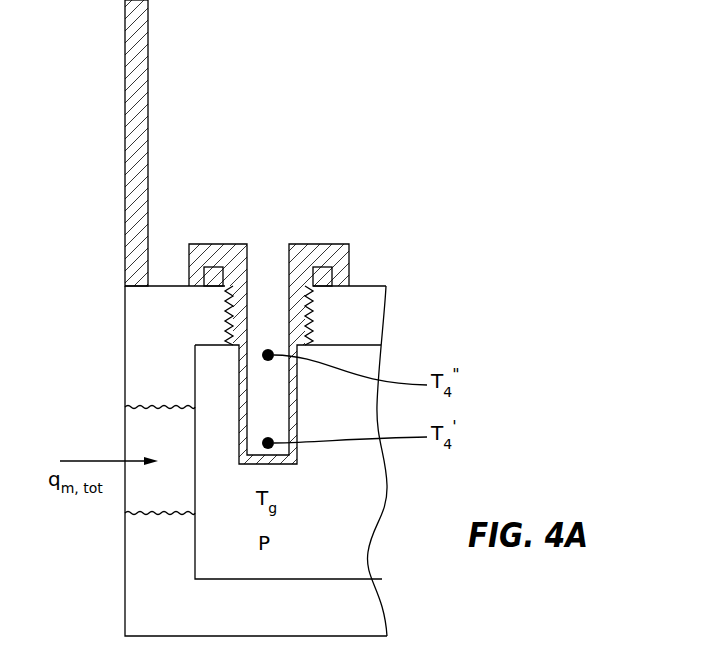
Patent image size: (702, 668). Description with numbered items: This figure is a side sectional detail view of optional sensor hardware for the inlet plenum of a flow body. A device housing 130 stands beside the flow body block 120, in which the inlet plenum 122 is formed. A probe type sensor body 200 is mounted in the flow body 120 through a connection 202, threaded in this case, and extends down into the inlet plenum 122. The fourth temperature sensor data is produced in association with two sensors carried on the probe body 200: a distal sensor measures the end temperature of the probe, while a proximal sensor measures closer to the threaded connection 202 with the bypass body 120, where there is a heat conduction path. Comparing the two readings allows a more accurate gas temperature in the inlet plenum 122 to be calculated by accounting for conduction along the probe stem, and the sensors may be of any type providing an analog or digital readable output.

The device housing 130 is at (125, 117).
The flow body block 120 is at (363, 316).
The inlet plenum 122 is at (223, 541).
The probe type sensor body 200 is at (239, 382).
The connection 202 is at (225, 320).